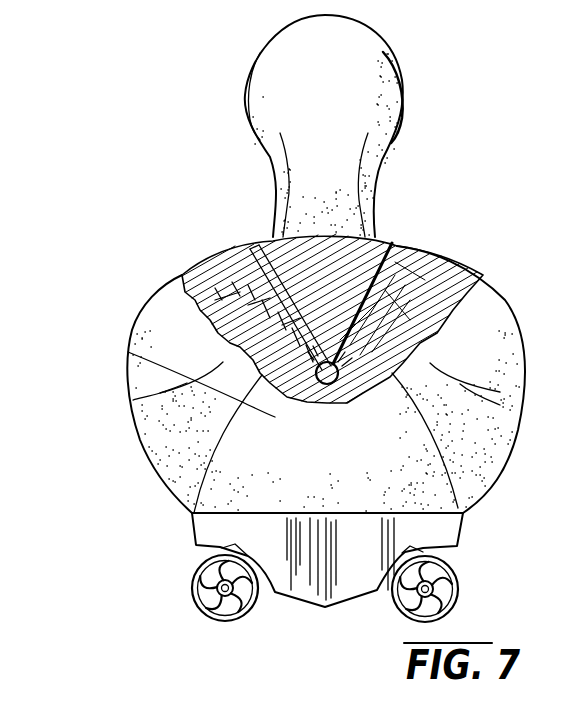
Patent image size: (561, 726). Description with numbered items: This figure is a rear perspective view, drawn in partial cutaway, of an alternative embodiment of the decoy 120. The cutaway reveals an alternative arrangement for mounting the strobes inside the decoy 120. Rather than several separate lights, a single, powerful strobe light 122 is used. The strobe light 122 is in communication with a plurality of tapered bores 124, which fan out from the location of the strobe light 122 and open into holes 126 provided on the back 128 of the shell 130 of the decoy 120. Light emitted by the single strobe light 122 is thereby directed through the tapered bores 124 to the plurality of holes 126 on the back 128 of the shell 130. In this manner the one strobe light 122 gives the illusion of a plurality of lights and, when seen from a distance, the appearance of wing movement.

The decoy 120 is at (192, 161).
The strobe light 122 is at (128, 352).
The tapered bores 124 is at (197, 273).
The holes 126 is at (270, 241).
The back 128 is at (277, 240).
The shell 130 is at (132, 325).